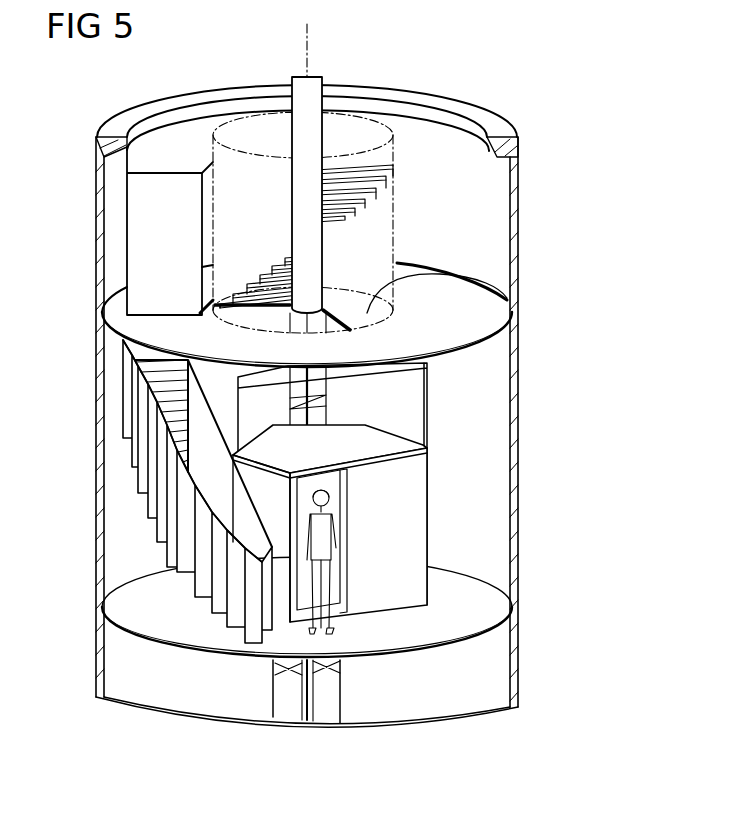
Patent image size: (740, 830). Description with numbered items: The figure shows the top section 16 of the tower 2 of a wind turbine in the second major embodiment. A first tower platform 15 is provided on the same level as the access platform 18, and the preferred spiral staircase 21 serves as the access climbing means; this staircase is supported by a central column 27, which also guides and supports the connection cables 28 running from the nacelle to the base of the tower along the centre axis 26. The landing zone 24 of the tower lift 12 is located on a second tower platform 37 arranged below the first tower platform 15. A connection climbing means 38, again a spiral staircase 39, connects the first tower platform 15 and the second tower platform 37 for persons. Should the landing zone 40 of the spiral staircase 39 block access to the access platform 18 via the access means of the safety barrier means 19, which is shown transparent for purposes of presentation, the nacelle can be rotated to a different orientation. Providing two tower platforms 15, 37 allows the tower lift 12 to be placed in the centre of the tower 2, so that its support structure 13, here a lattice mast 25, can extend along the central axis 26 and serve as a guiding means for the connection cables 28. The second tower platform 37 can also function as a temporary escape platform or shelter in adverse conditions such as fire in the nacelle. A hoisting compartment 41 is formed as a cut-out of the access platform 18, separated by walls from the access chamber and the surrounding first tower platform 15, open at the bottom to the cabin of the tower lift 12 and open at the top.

The tower 2 is at (567, 367).
The tower lift 12 is at (390, 518).
The support structure 13 is at (265, 716).
The first tower platform 15 is at (512, 316).
The top section 16 is at (375, 432).
The access platform 18 is at (511, 298).
The safety barrier means 19 is at (233, 124).
The spiral staircase 21 is at (372, 183).
The landing zone 24 is at (453, 478).
The lattice mast 25 is at (342, 695).
The centre axis 26 is at (309, 43).
The central column 27 is at (308, 218).
The connection cables 28 is at (314, 716).
The second tower platform 37 is at (487, 598).
The connection climbing means 38 is at (158, 491).
The spiral staircase 39 is at (137, 480).
The landing zone 40 is at (147, 192).
The hoisting compartment 41 is at (247, 262).